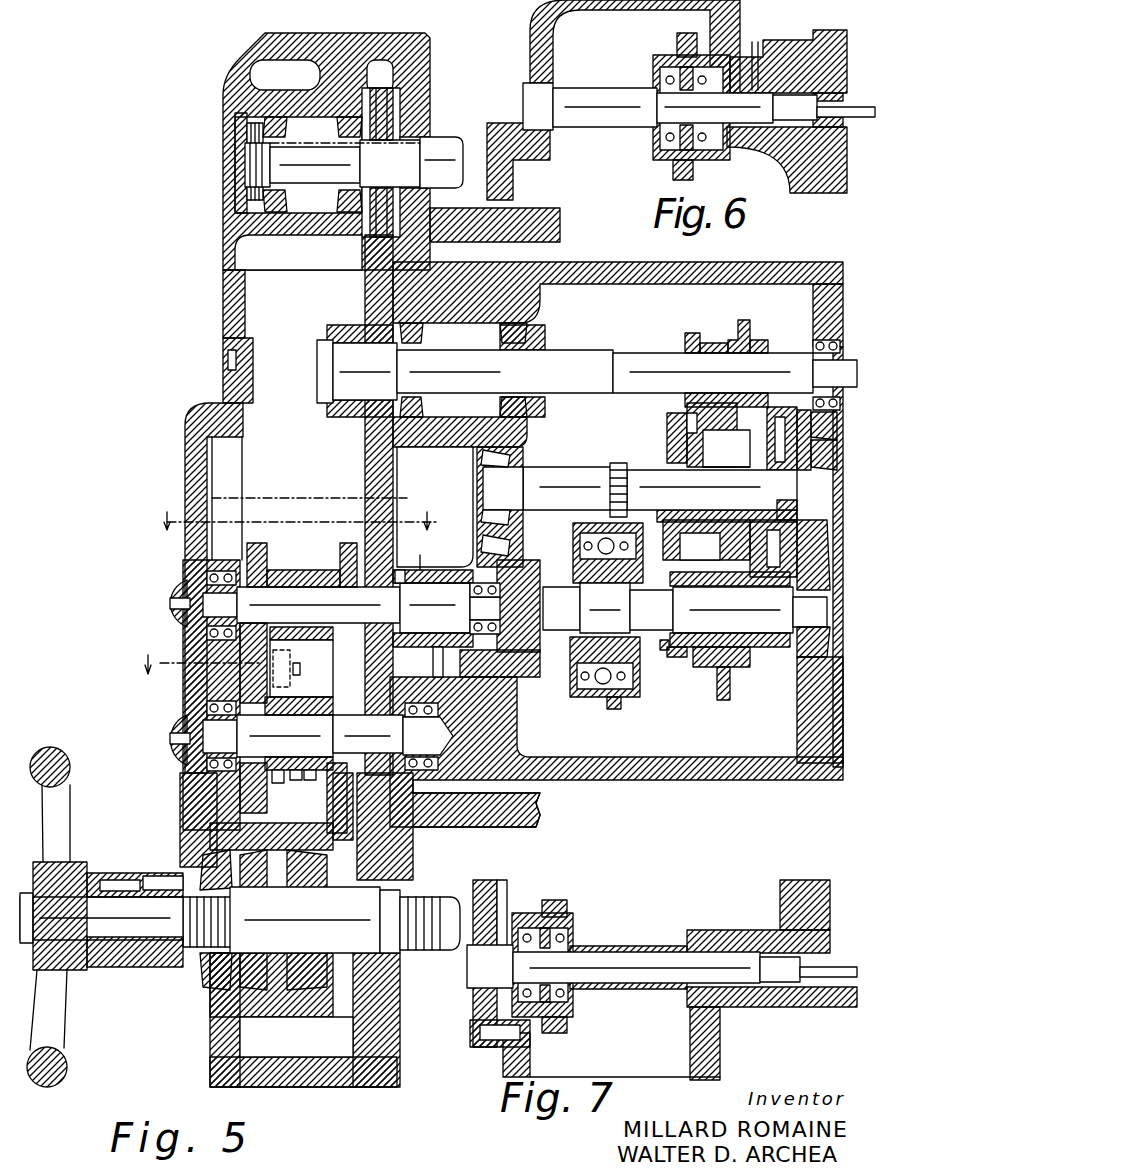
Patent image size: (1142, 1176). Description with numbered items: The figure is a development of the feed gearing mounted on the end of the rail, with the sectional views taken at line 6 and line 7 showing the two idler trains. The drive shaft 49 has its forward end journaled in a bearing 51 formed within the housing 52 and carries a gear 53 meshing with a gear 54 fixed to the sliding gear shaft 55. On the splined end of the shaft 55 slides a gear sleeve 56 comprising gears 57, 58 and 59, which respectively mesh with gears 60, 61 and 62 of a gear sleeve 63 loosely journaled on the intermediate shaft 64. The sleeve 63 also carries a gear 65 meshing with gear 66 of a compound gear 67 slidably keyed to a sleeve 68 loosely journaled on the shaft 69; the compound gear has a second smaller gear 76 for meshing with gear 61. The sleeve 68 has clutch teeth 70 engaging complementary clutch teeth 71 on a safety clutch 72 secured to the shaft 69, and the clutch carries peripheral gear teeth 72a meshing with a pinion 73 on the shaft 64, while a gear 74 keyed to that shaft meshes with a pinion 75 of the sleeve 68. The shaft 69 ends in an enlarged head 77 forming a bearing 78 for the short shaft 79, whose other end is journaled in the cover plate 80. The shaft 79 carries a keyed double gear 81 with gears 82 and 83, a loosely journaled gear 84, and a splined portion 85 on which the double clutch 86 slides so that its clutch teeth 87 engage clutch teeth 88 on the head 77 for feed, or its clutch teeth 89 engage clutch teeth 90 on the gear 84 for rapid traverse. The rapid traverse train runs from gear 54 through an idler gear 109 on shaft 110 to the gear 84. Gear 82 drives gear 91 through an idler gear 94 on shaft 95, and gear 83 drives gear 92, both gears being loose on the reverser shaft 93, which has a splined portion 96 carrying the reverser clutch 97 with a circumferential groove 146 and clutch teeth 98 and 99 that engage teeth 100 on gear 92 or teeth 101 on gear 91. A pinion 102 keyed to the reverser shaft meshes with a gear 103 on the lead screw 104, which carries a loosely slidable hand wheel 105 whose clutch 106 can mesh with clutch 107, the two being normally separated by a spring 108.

In FIG. 5, the drive shaft 49 is at (468, 130).
In FIG. 5, the bearing 51 is at (348, 92).
In FIG. 5, the housing 52 is at (223, 296).
In FIG. 5, the gear 53 is at (395, 97).
In FIG. 5, the gear 54 is at (365, 280).
In FIG. 5, the sliding gear shaft 55 is at (585, 337).
In FIG. 5, the gear sleeve 56 is at (712, 343).
In FIG. 5, the gear 57 is at (768, 347).
In FIG. 5, the gear 58 is at (750, 328).
In FIG. 5, the gear 59 is at (687, 332).
In FIG. 5, the gear 60 is at (838, 428).
In FIG. 5, the gear 61 is at (700, 428).
In FIG. 5, the gear 62 is at (667, 417).
In FIG. 5, the gear sleeve 63 is at (712, 463).
In FIG. 5, the intermediate shaft 64 is at (637, 470).
In FIG. 5, the gear 65 is at (767, 457).
In FIG. 5, the gear 66 is at (730, 698).
In FIG. 5, the compound gear 67 is at (747, 665).
In FIG. 5, the sleeve 68 is at (682, 658).
In FIG. 5, the shaft 69 is at (825, 618).
In FIG. 5, the clutch teeth 70 is at (663, 652).
In FIG. 5, the clutch teeth 71 is at (670, 648).
In FIG. 5, the safety clutch 72 is at (570, 670).
In FIG. 5, the gear teeth 72a is at (614, 709).
In FIG. 5, the pinion 73 is at (610, 460).
In FIG. 5, the gear 74 is at (837, 437).
In FIG. 5, the pinion 75 is at (750, 650).
In FIG. 5, the gear 76 is at (707, 670).
In FIG. 5, the enlarged head 77 is at (533, 562).
In FIG. 5, the bearing 78 is at (477, 563).
In FIG. 5, the short shaft 79 is at (307, 577).
In FIG. 5, the cover plate 80 is at (172, 570).
In FIG. 5, the double gear 81 is at (323, 570).
In FIG. 5, the gear 82 is at (310, 660).
In FIG. 5, the gear 83 is at (340, 657).
In FIG. 5, the gear 84 is at (360, 533).
In FIG. 5, the splined portion 85 is at (415, 647).
In FIG. 5, the double clutch 86 is at (430, 570).
In FIG. 5, the clutch teeth 87 is at (440, 650).
In FIG. 5, the clutch teeth 88 is at (478, 648).
In FIG. 5, the clutch teeth 89 is at (420, 555).
In FIG. 5, the clutch teeth 90 is at (400, 570).
In FIG. 5, the gear 91 is at (258, 807).
In FIG. 5, the gear 92 is at (345, 807).
In FIG. 5, the reverser shaft 93 is at (183, 762).
In FIG. 7, the idler gear 94 is at (567, 903).
In FIG. 7, the shaft 95 is at (607, 958).
In FIG. 5, the splined portion 96 is at (292, 733).
In FIG. 5, the reverser clutch 97 is at (303, 770).
In FIG. 5, the clutch teeth 98 is at (330, 697).
In FIG. 5, the clutch teeth 99 is at (296, 780).
In FIG. 5, the clutch teeth 100 is at (310, 780).
In FIG. 5, the clutch teeth 101 is at (278, 783).
In FIG. 5, the pinion 102 is at (418, 826).
In FIG. 5, the gear 103 is at (412, 981).
In FIG. 5, the lead screw 104 is at (430, 897).
In FIG. 5, the hand wheel 105 is at (85, 873).
In FIG. 5, the clutch 106 is at (90, 960).
In FIG. 5, the clutch 107 is at (143, 876).
In FIG. 5, the spring 108 is at (123, 877).
In FIG. 6, the idler gear 109 is at (673, 172).
In FIG. 6, the shaft 110 is at (595, 97).
In FIG. 5, the circumferential groove 146 is at (300, 670).
In FIG. 5, the section line 6— 6 is at (297, 531).
In FIG. 5, the section line 7— 7 is at (223, 674).